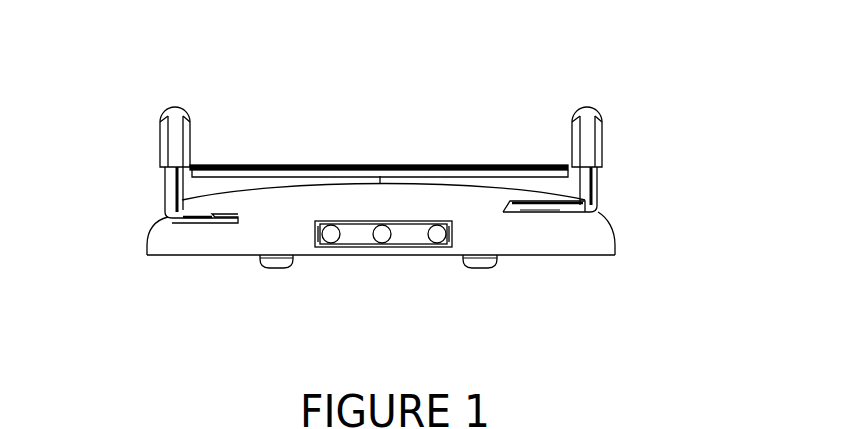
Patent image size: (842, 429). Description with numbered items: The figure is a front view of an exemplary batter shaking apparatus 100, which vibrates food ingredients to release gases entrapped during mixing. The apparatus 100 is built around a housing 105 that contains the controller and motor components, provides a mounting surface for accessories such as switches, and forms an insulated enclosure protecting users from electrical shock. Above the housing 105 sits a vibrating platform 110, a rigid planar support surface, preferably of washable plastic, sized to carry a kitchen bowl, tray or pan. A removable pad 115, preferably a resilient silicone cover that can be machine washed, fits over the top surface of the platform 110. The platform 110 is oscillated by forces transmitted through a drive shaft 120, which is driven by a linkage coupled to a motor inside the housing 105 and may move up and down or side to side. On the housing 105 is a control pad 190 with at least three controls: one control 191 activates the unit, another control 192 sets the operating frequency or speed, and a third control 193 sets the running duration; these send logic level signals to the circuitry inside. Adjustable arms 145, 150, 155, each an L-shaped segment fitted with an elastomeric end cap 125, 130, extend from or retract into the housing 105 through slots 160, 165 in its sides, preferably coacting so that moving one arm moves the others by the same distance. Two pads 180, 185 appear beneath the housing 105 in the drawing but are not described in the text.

The batter shaking apparatus 100 is at (383, 277).
The housing 105 is at (152, 242).
The vibrating platform 110 is at (217, 170).
The removable pad 115 is at (300, 168).
The drive shaft 120 is at (380, 180).
The elastomeric end cap 125 is at (585, 140).
The elastomeric end cap 130 is at (187, 137).
The adjustable arm 145 is at (590, 192).
The adjustable arm 150 is at (168, 185).
The adjustable arm 155 is at (567, 212).
The slot 160 is at (517, 205).
The slot 165 is at (222, 223).
The right pad 180 is at (485, 268).
The left pad 185 is at (273, 268).
The control pad 190 is at (393, 288).
The control 191 is at (331, 240).
The control 192 is at (384, 241).
The control 193 is at (438, 242).